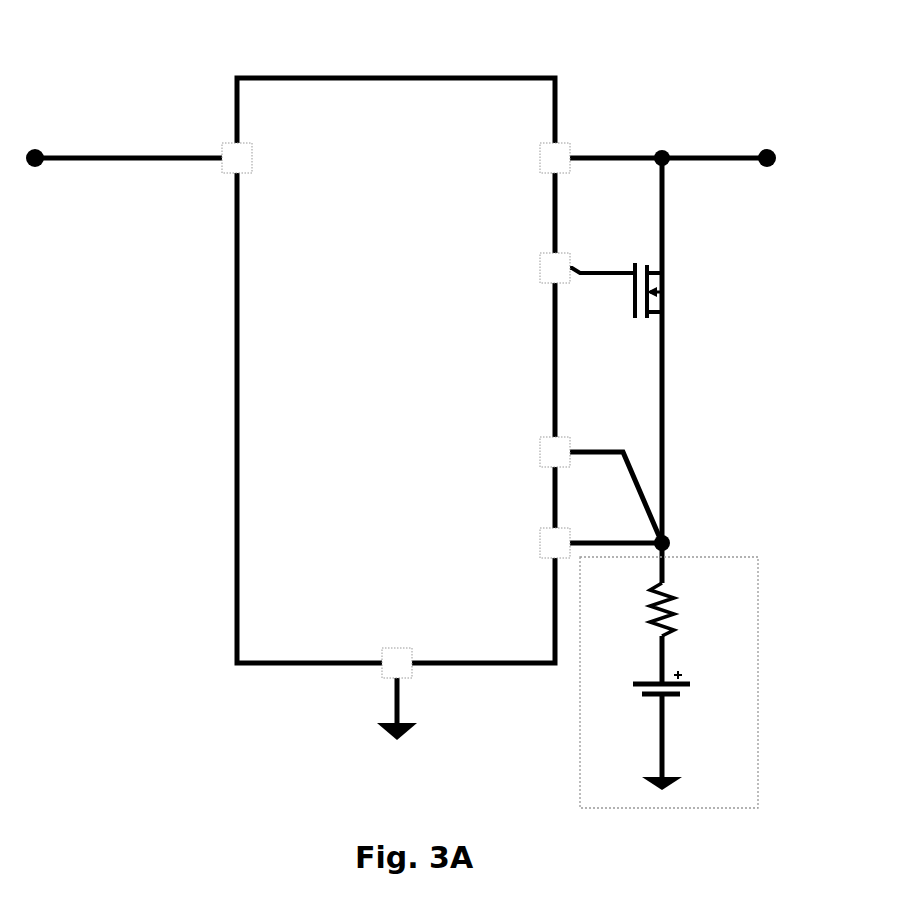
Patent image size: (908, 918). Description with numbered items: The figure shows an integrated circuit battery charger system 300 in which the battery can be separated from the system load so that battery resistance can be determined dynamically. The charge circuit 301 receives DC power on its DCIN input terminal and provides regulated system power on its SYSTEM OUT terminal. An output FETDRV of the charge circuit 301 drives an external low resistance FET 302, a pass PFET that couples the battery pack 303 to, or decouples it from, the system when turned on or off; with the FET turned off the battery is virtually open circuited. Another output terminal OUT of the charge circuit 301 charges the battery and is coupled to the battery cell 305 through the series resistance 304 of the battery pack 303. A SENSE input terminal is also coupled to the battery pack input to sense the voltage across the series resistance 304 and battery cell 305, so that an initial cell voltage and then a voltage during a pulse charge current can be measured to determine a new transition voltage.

The integrated circuit battery charger system 300 is at (603, 40).
The charge circuit 301 is at (337, 262).
The low resistance FET 302 is at (655, 294).
The battery pack 303 is at (755, 742).
The series resistance (ESR) 304 is at (663, 585).
The battery cell 305 is at (635, 693).